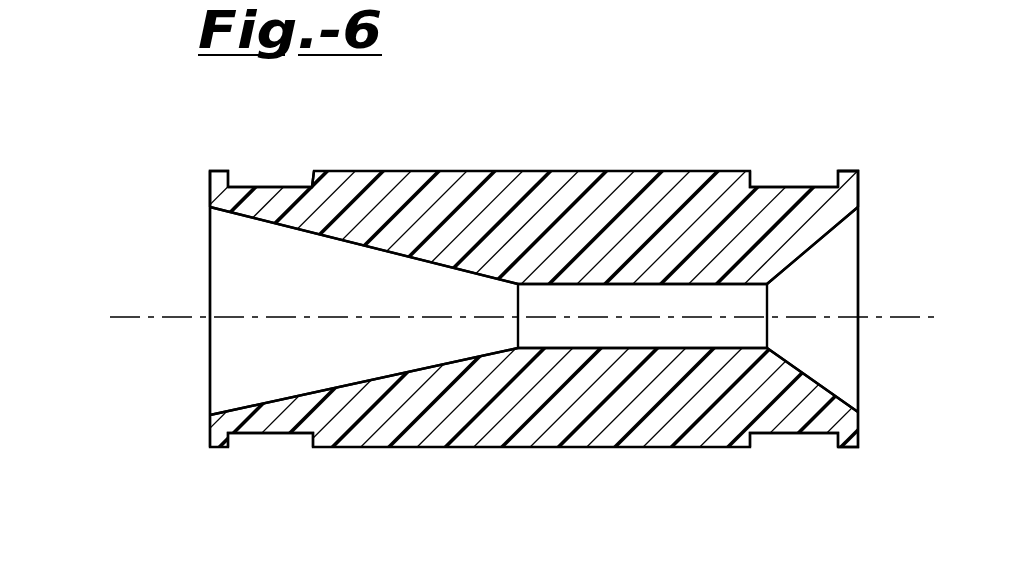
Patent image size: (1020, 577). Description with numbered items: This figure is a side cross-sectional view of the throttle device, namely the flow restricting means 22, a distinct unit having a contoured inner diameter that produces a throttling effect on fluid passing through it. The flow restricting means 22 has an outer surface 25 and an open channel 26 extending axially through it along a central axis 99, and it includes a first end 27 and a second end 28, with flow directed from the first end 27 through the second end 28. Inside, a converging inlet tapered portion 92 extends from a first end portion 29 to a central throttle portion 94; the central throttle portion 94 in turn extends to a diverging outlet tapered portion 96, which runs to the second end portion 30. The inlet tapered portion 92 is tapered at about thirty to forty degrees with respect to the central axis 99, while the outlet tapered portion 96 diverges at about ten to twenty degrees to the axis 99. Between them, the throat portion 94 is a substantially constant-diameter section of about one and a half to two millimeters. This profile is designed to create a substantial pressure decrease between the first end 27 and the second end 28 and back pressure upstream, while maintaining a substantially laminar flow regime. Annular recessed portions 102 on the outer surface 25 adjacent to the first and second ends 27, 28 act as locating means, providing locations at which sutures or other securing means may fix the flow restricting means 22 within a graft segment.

The flow restricting means 22 is at (861, 147).
The outer surface 25 is at (525, 171).
The open channel 26 is at (191, 251).
The first end 27 is at (860, 185).
The second end 28 is at (210, 195).
The first end portion 29 is at (782, 187).
The second end portion 30 is at (264, 186).
The converging inlet tapered portion 92 is at (833, 343).
The central throttle portion 94 is at (583, 348).
The diverging outlet tapered portion 96 is at (385, 248).
The central axis 99 is at (138, 315).
The annular recessed portions 102 is at (267, 433).